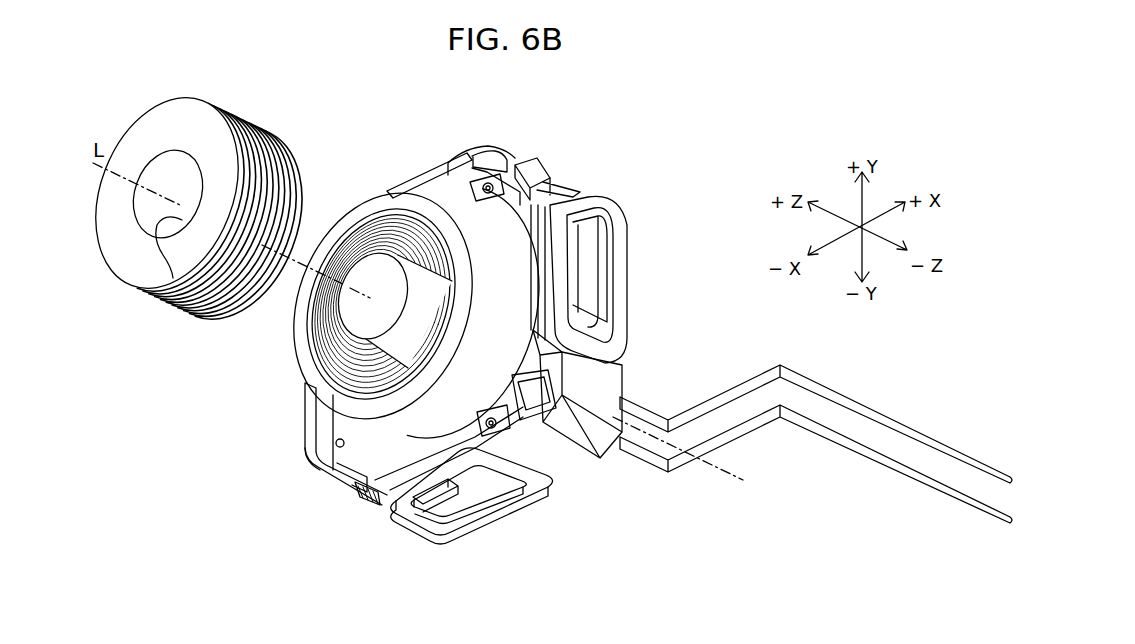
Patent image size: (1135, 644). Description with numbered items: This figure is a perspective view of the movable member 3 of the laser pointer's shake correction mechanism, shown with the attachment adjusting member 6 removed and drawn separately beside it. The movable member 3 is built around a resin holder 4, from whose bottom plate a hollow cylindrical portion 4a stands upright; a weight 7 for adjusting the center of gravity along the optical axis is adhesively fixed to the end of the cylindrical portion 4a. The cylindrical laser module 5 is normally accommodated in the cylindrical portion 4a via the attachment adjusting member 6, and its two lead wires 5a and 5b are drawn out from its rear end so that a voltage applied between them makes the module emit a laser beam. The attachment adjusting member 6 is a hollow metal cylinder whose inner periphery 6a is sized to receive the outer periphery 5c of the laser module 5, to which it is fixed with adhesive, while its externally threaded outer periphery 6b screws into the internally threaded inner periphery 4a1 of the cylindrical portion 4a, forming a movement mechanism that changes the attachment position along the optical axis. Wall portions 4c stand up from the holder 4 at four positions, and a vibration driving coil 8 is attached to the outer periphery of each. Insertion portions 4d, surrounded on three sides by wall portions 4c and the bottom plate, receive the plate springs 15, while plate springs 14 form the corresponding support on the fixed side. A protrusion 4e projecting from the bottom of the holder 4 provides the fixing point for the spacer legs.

The movable member 3 is at (294, 76).
The holder 4 is at (598, 272).
The cylindrical portion 4a is at (408, 214).
The inner periphery of the cylindrical portion 4a1 is at (362, 243).
The wall portions 4c is at (447, 172).
The insertion portions 4d is at (583, 403).
The protrusion 4e is at (498, 525).
The laser module 5 is at (340, 290).
The lead wire 5a is at (760, 420).
The lead wire 5b is at (780, 365).
The outer periphery of the laser module 5c is at (392, 350).
The attachment adjusting member 6 is at (172, 130).
The inner periphery of the attachment adjusting member 6a is at (160, 308).
The outer periphery of the attachment adjusting member 6b is at (220, 312).
The weight 7 is at (375, 207).
The vibration driving coil 8 is at (492, 148).
The plate spring 14 is at (530, 160).
The plate spring 15 is at (557, 460).